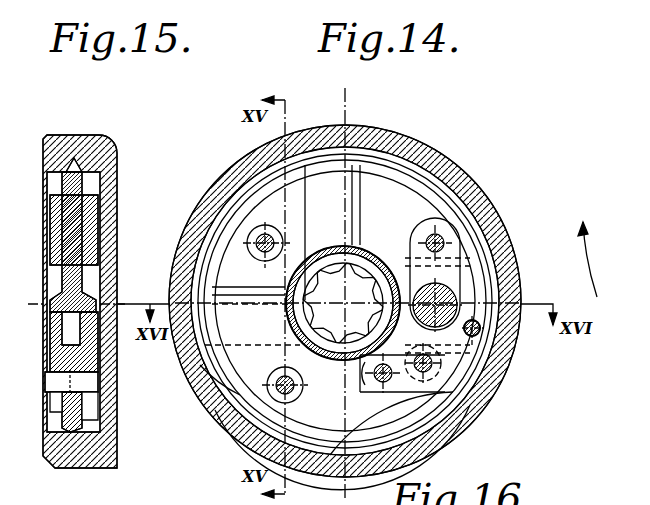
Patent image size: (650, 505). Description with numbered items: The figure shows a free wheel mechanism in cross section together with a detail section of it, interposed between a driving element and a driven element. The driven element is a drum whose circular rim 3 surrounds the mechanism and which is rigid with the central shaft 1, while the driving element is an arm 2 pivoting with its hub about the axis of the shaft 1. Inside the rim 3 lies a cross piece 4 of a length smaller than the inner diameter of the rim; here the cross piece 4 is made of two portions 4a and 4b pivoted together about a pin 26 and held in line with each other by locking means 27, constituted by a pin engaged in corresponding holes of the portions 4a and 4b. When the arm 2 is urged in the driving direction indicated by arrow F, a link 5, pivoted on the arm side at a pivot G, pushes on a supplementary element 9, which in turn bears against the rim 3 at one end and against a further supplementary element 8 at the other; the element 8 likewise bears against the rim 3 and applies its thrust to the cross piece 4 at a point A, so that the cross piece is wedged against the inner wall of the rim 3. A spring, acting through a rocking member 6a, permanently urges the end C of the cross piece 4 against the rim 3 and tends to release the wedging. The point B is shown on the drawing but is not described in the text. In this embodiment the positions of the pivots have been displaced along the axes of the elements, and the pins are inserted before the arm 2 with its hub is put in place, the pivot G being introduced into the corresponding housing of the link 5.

In FIG. 14, the shaft 1 is at (357, 290).
In FIG. 14, the arm 2 is at (380, 275).
In FIG. 15, the rim 3 is at (76, 170).
In FIG. 14, the rim 3 is at (415, 186).
In FIG. 15, the cross piece 4 is at (60, 409).
In FIG. 14, the portion of cross piece 4a is at (337, 422).
In FIG. 14, the portion of cross piece 4b is at (452, 388).
In FIG. 14, the link 5 is at (443, 258).
In FIG. 14, the rocking member 6a is at (480, 335).
In FIG. 15, the supplementary element 8 is at (70, 272).
In FIG. 14, the supplementary element 8 is at (237, 268).
In FIG. 15, the supplementary element 9 is at (88, 210).
In FIG. 14, the supplementary element 9 is at (381, 195).
In FIG. 14, the pin 26 is at (428, 374).
In FIG. 14, the locking means 27 is at (388, 384).
In FIG. 14, the point A is at (272, 395).
In FIG. 14, the point B is at (196, 376).
In FIG. 14, the end C is at (496, 374).
In FIG. 14, the pivot G is at (452, 300).
In FIG. 14, the arrow F is at (596, 259).